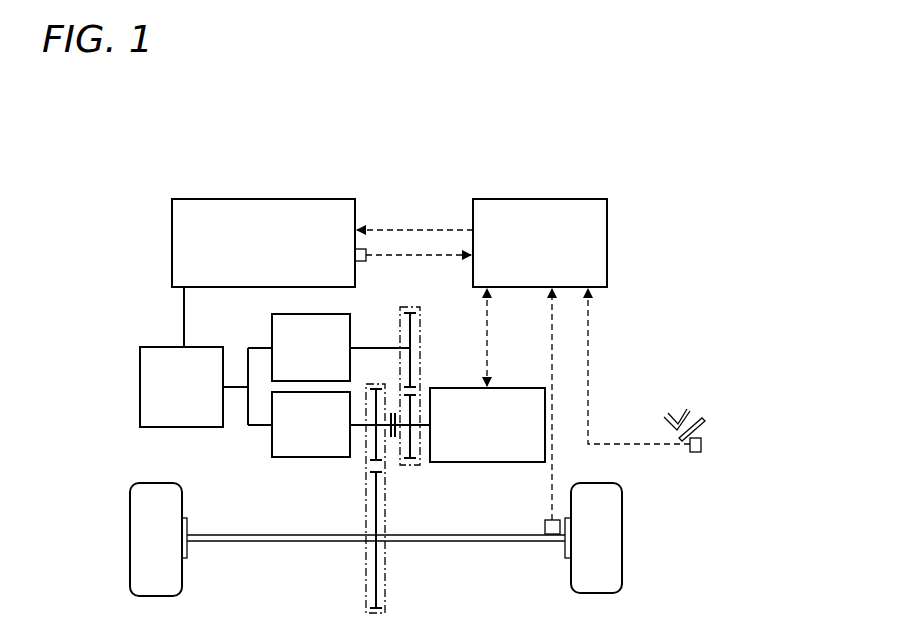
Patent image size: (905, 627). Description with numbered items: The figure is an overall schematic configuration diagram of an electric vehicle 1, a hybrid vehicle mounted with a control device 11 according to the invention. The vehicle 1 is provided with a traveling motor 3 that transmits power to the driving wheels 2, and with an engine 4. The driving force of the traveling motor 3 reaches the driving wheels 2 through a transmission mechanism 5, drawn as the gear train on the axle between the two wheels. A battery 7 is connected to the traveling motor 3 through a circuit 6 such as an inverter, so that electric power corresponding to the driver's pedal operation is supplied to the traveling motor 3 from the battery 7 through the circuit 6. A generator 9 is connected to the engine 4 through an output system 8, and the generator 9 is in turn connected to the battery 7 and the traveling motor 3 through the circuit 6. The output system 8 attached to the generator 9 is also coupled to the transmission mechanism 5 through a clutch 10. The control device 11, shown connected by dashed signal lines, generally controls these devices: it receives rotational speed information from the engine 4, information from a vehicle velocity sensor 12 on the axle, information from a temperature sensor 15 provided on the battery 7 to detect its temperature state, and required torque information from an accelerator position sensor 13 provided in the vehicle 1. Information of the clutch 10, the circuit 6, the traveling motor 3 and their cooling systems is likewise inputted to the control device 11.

The electric vehicle 1 is at (652, 156).
The driving wheels 2 is at (130, 540).
The traveling motor 3 is at (288, 457).
The engine 4 is at (453, 388).
The transmission mechanism 5 is at (361, 459).
The circuit 6 is at (140, 412).
The battery 7 is at (305, 199).
The output system 8 is at (423, 357).
The generator 9 is at (347, 328).
The clutch 10 is at (392, 447).
The control device 11 is at (551, 199).
The vehicle velocity sensor 12 is at (545, 527).
The accelerator position sensor 13 is at (703, 445).
The temperature sensor 15 is at (364, 262).